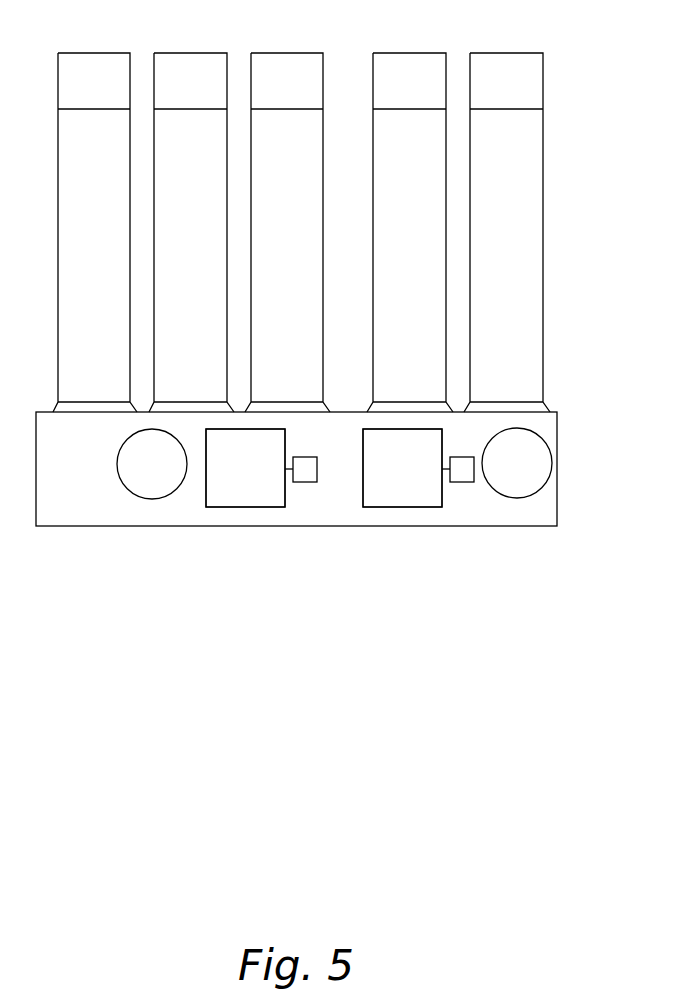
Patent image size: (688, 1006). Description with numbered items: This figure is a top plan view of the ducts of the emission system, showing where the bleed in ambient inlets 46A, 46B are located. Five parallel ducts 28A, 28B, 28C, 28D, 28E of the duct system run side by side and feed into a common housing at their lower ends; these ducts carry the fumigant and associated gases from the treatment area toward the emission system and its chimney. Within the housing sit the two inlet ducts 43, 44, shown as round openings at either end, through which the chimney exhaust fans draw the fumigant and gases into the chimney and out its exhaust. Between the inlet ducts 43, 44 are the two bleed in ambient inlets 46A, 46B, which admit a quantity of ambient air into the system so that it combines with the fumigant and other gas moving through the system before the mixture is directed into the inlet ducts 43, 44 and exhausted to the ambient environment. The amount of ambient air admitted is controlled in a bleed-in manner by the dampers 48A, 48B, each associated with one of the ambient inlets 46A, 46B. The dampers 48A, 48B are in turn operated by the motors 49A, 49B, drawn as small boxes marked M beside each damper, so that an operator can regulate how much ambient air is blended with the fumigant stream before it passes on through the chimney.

The duct 28A is at (97, 53).
The duct 28B is at (193, 53).
The duct 28C is at (290, 53).
The duct 28D is at (405, 53).
The duct 28E is at (510, 53).
The inlet duct 43 is at (124, 444).
The inlet duct 44 is at (546, 441).
The bleed in ambient inlet 46A is at (246, 507).
The bleed in ambient inlet 46B is at (393, 507).
The damper 48A is at (216, 507).
The damper 48B is at (410, 507).
The motor 49A is at (303, 482).
The motor 49B is at (462, 482).